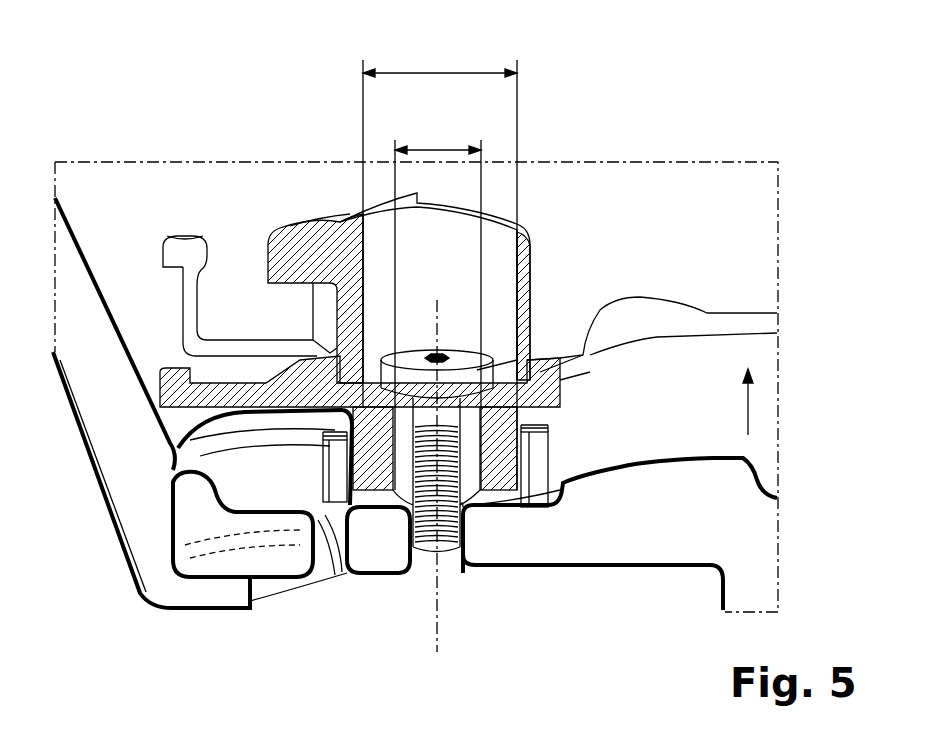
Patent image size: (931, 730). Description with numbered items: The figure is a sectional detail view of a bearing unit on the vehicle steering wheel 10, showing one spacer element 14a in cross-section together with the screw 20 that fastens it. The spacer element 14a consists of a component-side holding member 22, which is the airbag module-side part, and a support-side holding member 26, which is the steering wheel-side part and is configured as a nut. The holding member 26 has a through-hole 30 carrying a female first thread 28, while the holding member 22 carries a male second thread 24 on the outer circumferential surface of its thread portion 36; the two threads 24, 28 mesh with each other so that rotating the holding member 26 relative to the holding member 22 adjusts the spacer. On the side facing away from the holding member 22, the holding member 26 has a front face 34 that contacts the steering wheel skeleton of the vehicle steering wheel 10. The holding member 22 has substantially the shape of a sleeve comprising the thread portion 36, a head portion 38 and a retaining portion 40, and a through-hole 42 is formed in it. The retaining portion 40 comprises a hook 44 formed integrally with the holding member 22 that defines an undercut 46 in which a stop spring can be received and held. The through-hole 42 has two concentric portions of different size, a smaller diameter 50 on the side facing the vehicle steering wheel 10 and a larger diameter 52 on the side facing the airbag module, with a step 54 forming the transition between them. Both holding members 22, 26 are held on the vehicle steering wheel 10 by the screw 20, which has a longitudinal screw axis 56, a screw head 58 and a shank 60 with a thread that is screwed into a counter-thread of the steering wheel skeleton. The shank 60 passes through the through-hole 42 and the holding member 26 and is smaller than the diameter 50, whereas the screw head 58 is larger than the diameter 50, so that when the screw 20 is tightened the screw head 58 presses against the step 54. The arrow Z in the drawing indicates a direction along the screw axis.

The vehicle steering wheel 10 is at (608, 547).
The spacer element 14a is at (312, 182).
The screw 20 is at (427, 548).
The component-side holding member 22 is at (329, 207).
The second thread 24 is at (498, 513).
The support-side holding member 26 is at (533, 495).
The first thread 28 is at (547, 463).
The through-hole 30 is at (467, 540).
The front face 34 is at (333, 545).
The thread portion 36 is at (387, 480).
The head portion 38 is at (527, 264).
The retaining portion 40 is at (327, 267).
The through-hole 42 is at (441, 253).
The hook 44 is at (270, 263).
The undercut 46 is at (293, 283).
The smaller diameter 50 is at (437, 149).
The larger diameter 52 is at (437, 72).
The step 54 is at (377, 375).
The longitudinal screw axis 56 is at (437, 638).
The screw head 58 is at (528, 356).
The shank 60 is at (490, 405).
The axial direction Z is at (779, 406).